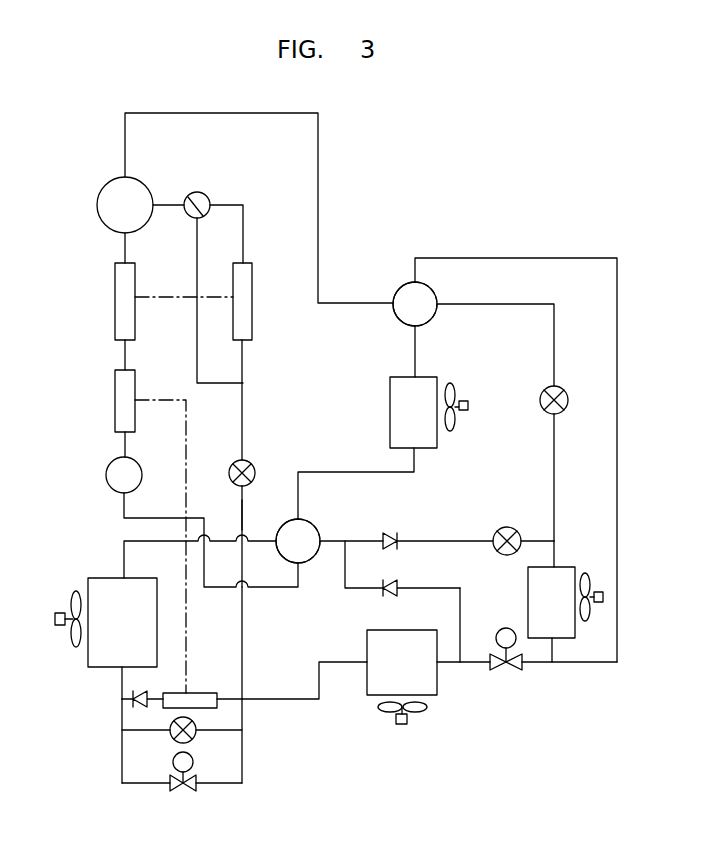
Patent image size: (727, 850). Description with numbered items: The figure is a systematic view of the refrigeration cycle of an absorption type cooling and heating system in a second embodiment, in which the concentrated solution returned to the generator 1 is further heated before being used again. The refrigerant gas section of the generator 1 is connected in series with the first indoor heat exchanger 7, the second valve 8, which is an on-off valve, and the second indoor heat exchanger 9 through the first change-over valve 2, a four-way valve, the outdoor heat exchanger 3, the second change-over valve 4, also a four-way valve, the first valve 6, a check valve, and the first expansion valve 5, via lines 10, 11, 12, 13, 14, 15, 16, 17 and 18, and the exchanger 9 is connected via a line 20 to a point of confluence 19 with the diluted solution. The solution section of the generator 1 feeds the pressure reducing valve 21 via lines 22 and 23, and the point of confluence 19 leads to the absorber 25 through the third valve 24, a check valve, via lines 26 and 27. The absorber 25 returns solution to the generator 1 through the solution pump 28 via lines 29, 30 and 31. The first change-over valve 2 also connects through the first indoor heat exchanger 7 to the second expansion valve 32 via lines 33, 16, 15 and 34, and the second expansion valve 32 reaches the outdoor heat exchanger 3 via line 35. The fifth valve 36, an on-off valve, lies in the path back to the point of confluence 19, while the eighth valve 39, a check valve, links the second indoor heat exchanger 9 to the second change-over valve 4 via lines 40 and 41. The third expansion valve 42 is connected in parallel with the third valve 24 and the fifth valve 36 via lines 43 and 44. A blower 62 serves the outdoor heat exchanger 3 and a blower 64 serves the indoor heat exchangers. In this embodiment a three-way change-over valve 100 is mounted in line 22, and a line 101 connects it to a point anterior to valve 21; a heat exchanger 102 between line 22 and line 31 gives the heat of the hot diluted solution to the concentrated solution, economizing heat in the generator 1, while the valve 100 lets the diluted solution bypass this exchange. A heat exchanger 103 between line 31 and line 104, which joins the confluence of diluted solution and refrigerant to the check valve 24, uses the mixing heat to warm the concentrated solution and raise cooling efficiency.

The generator 1 is at (105, 186).
The first change-over valve 2 is at (395, 290).
The outdoor heat exchanger 3 is at (390, 390).
The second change-over valve 4 is at (285, 520).
The first expansion valve 5 is at (495, 532).
The first valve 6 is at (393, 532).
The first indoor heat exchanger 7 is at (528, 593).
The second valve 8 is at (508, 673).
The second indoor heat exchanger 9 is at (367, 648).
The line 10 is at (216, 113).
The line 11 is at (417, 352).
The line 12 is at (343, 472).
The line 13 is at (363, 541).
The line 14 is at (537, 541).
The line 15 is at (554, 554).
The line 16 is at (554, 655).
The line 17 is at (542, 663).
The line 18 is at (455, 664).
The point of confluence 19 is at (243, 702).
The line 20 is at (300, 700).
The pressure reducing valve 21 is at (252, 467).
The line 22 is at (245, 207).
The line 23 is at (241, 515).
The third valve 24 is at (133, 705).
The absorber 25 is at (98, 578).
The line 26 is at (242, 769).
The line 27 is at (122, 690).
The solution pump 28 is at (107, 470).
The line 29 is at (122, 551).
The line 30 is at (258, 590).
The line 31 is at (126, 353).
The second expansion valve 32 is at (540, 396).
The line 33 is at (503, 258).
The line 34 is at (556, 500).
The line 35 is at (506, 304).
The fifth valve 36 is at (177, 792).
The eighth valve 39 is at (388, 598).
The line 40 is at (460, 640).
The line 41 is at (345, 586).
The third expansion valve 42 is at (195, 739).
The line 43 is at (242, 739).
The line 44 is at (147, 733).
The blower 62 is at (73, 647).
The blower 64 is at (382, 714).
The three-way change-over valve 100 is at (222, 185).
The line 101 is at (196, 340).
The heat exchanger 102 is at (115, 290).
The heat exchanger 103 is at (113, 397).
The line 104 is at (242, 692).